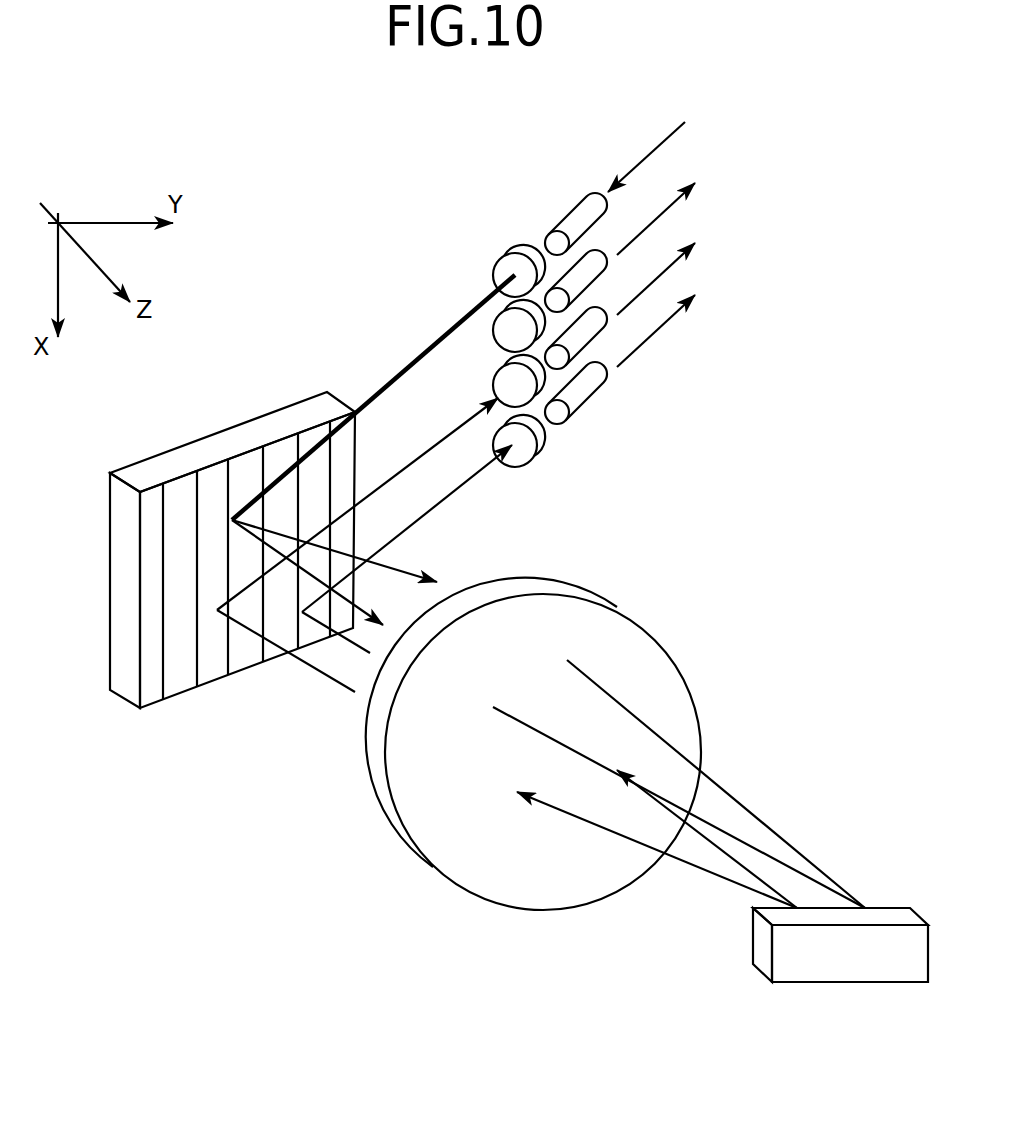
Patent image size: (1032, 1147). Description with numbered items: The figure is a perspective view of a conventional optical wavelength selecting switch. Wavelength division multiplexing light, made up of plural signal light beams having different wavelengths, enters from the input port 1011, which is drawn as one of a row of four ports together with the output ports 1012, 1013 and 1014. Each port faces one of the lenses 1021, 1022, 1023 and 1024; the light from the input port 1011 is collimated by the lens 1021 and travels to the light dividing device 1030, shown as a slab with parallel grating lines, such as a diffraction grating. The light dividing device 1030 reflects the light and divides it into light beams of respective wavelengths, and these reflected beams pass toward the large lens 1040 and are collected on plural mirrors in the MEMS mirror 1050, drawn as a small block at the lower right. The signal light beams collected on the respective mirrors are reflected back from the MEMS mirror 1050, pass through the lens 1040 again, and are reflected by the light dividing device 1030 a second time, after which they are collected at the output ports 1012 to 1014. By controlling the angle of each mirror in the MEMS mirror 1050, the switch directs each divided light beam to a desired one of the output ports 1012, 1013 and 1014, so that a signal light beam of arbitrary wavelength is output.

The input port 1011 is at (583, 196).
The output port 1012 is at (545, 250).
The output port 1013 is at (603, 333).
The output port 1014 is at (567, 413).
The lens 1021 is at (494, 270).
The lens 1022 is at (493, 340).
The lens 1023 is at (494, 390).
The lens 1024 is at (543, 450).
The light dividing device 1030 is at (216, 432).
The lens 1040 is at (677, 662).
The MEMS mirror 1050 is at (897, 908).